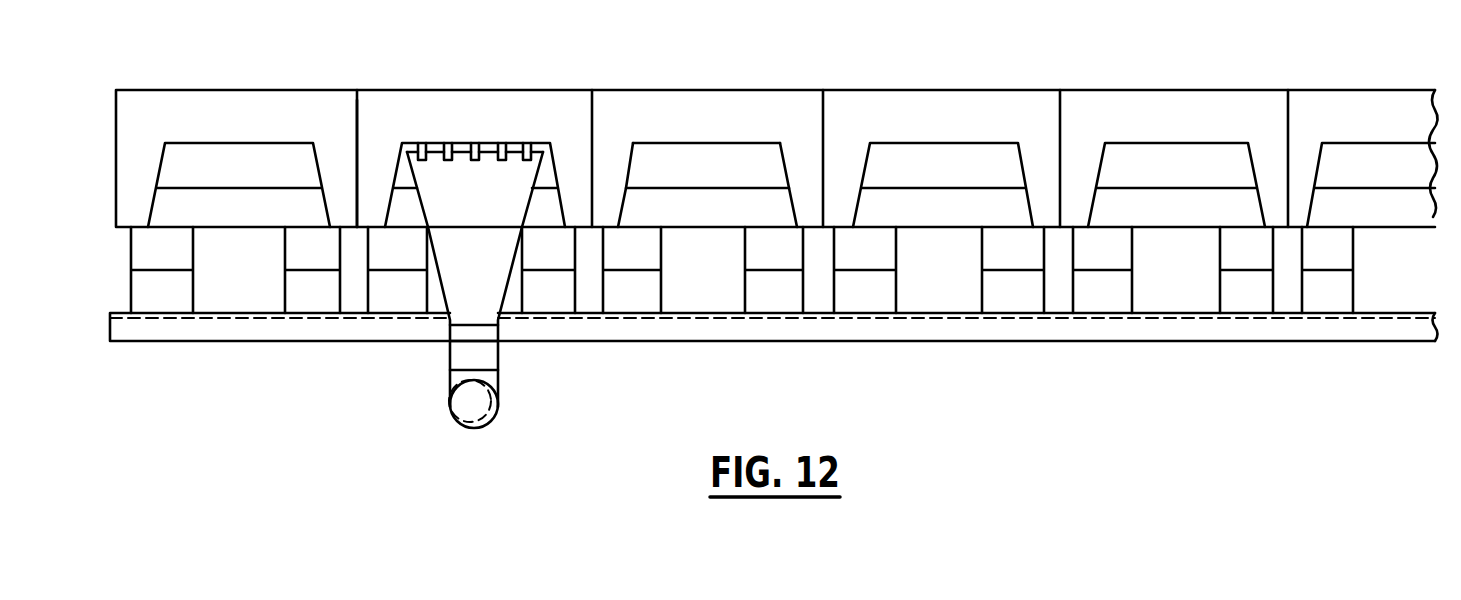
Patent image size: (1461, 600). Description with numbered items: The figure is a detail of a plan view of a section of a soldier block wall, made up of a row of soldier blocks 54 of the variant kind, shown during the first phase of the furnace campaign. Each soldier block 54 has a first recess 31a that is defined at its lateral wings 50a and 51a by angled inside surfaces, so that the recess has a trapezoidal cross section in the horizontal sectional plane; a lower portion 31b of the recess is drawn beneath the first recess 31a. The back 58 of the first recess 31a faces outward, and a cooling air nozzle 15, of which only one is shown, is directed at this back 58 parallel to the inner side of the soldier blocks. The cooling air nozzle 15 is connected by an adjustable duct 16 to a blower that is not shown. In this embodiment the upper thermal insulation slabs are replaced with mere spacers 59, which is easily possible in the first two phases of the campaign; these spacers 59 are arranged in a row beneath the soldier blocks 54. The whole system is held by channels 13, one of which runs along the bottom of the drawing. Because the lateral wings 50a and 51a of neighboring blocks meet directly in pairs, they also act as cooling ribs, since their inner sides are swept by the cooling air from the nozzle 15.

The soldier block 54 is at (848, 104).
The lateral wing 50a is at (340, 188).
The lateral wing 51a is at (372, 188).
The cooling air nozzle 15 is at (492, 223).
The adjustable duct 16 is at (480, 403).
The back of the first recess 58 is at (733, 156).
The first recess 31a is at (648, 162).
The lower insert part 31b is at (698, 207).
The spacer 59 is at (153, 290).
The channel 13 is at (943, 332).